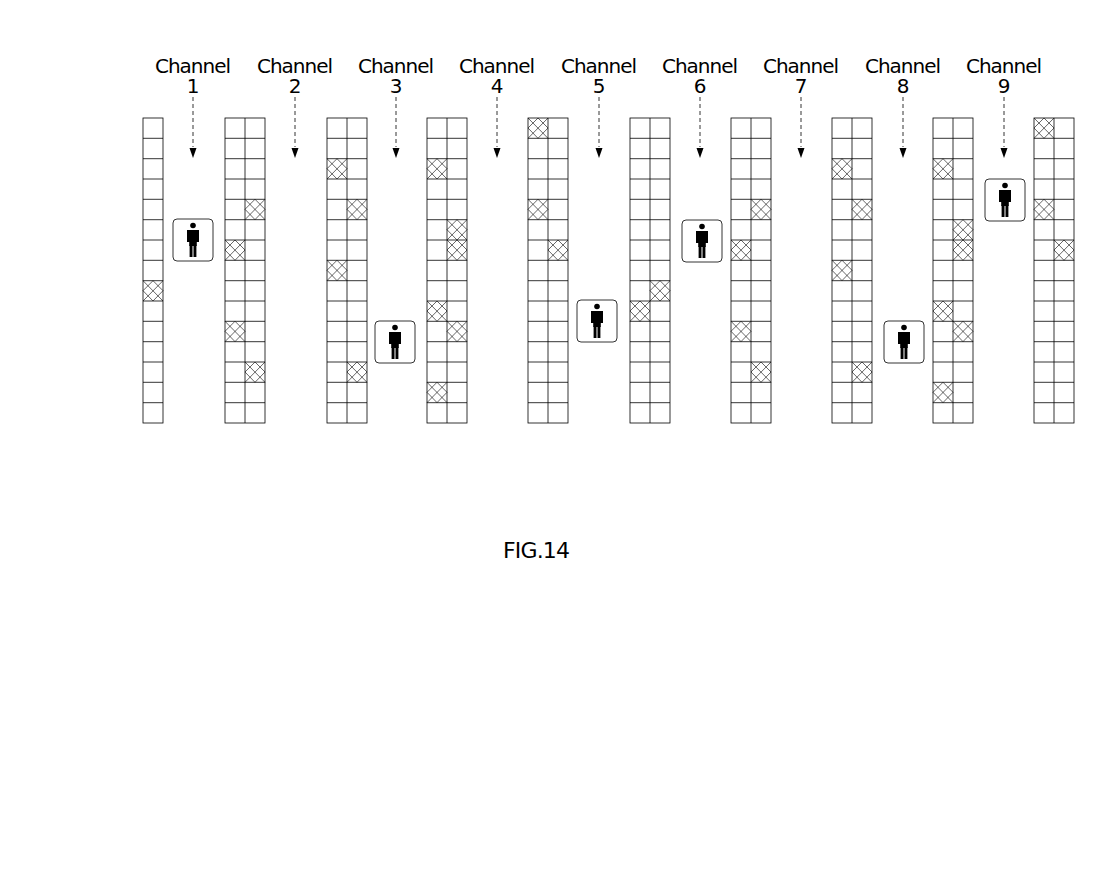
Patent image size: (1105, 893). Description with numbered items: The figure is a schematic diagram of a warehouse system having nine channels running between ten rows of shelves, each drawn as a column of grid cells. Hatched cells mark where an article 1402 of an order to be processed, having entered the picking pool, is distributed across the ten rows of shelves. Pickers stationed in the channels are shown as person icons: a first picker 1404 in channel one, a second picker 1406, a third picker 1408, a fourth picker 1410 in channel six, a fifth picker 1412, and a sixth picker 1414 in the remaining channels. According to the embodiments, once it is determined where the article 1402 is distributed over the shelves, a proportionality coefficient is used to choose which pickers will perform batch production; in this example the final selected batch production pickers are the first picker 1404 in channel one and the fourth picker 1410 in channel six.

The article 1402 is at (138, 286).
The first picker 1404 is at (193, 271).
The second picker 1406 is at (395, 310).
The third picker 1408 is at (597, 290).
The fourth picker 1410 is at (701, 272).
The fifth picker 1412 is at (904, 311).
The sixth picker 1414 is at (1005, 231).